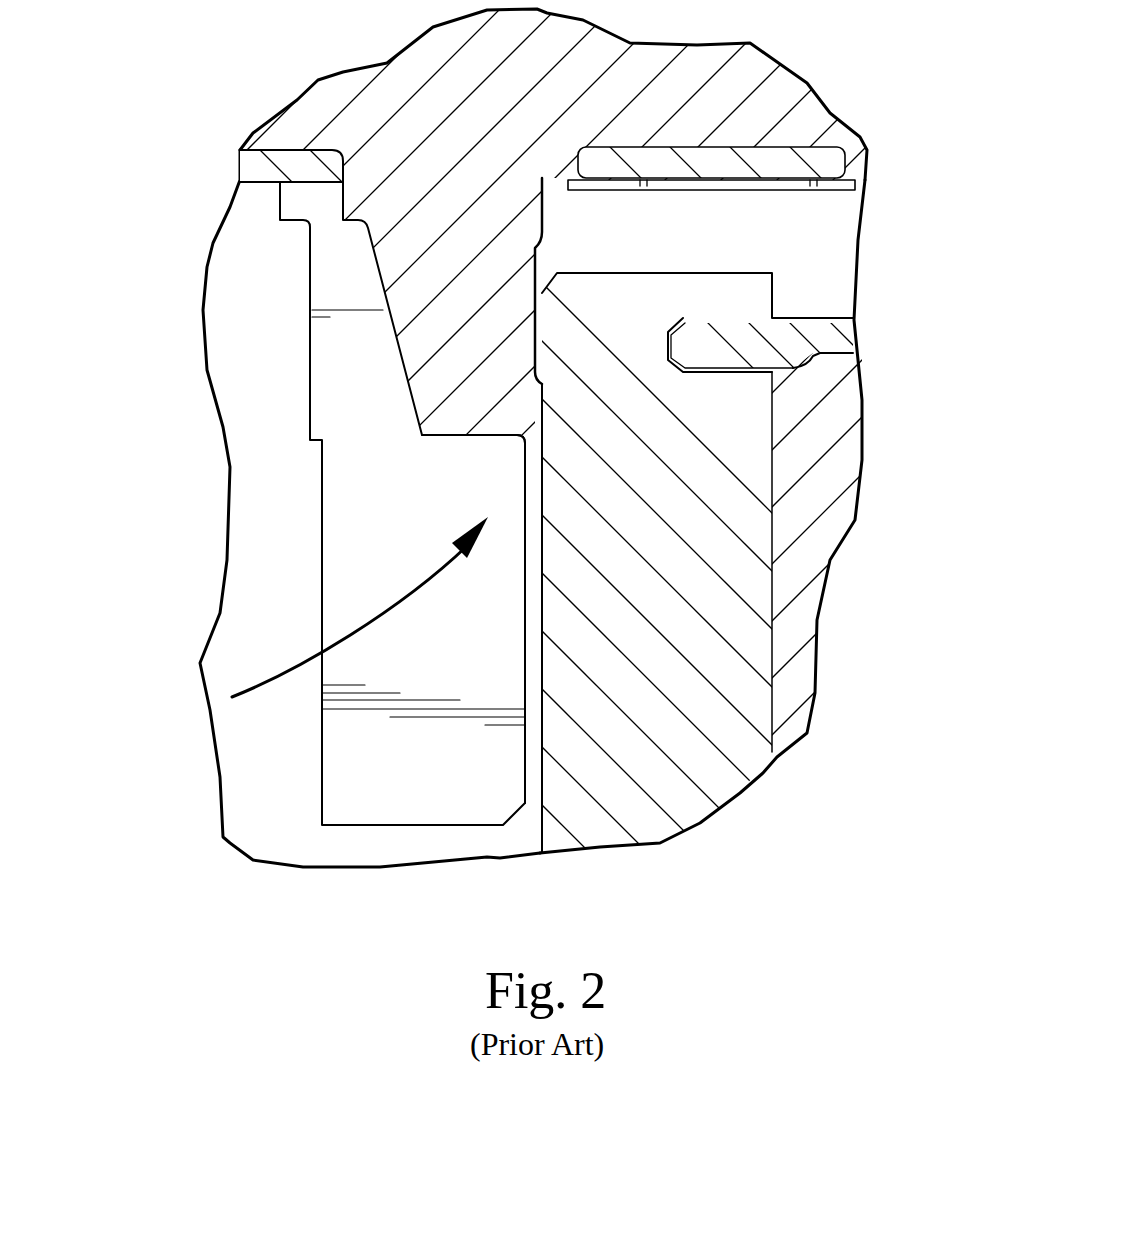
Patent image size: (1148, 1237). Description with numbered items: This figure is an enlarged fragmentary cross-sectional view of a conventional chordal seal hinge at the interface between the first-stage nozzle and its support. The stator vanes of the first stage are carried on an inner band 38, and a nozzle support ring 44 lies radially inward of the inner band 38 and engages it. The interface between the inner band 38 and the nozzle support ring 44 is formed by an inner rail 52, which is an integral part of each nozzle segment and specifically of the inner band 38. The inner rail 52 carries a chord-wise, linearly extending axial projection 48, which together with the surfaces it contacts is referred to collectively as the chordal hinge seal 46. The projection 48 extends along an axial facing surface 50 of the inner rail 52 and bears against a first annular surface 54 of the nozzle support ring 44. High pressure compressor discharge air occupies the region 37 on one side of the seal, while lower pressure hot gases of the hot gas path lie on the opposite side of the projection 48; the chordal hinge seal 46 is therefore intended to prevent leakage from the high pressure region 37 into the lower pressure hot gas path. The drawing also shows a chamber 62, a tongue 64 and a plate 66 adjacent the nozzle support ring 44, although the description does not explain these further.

The region 37 is at (258, 603).
The inner band 38 is at (372, 107).
The nozzle support ring 44 is at (693, 807).
The chordal hinge seal 46 is at (240, 338).
The axial projection 48 is at (537, 403).
The axial facing surface 50 is at (535, 267).
The inner rail 52 is at (413, 247).
The first annular surface 54 is at (540, 593).
The chamber 62 is at (701, 242).
The tongue 64 is at (763, 273).
The plate 66 is at (777, 187).